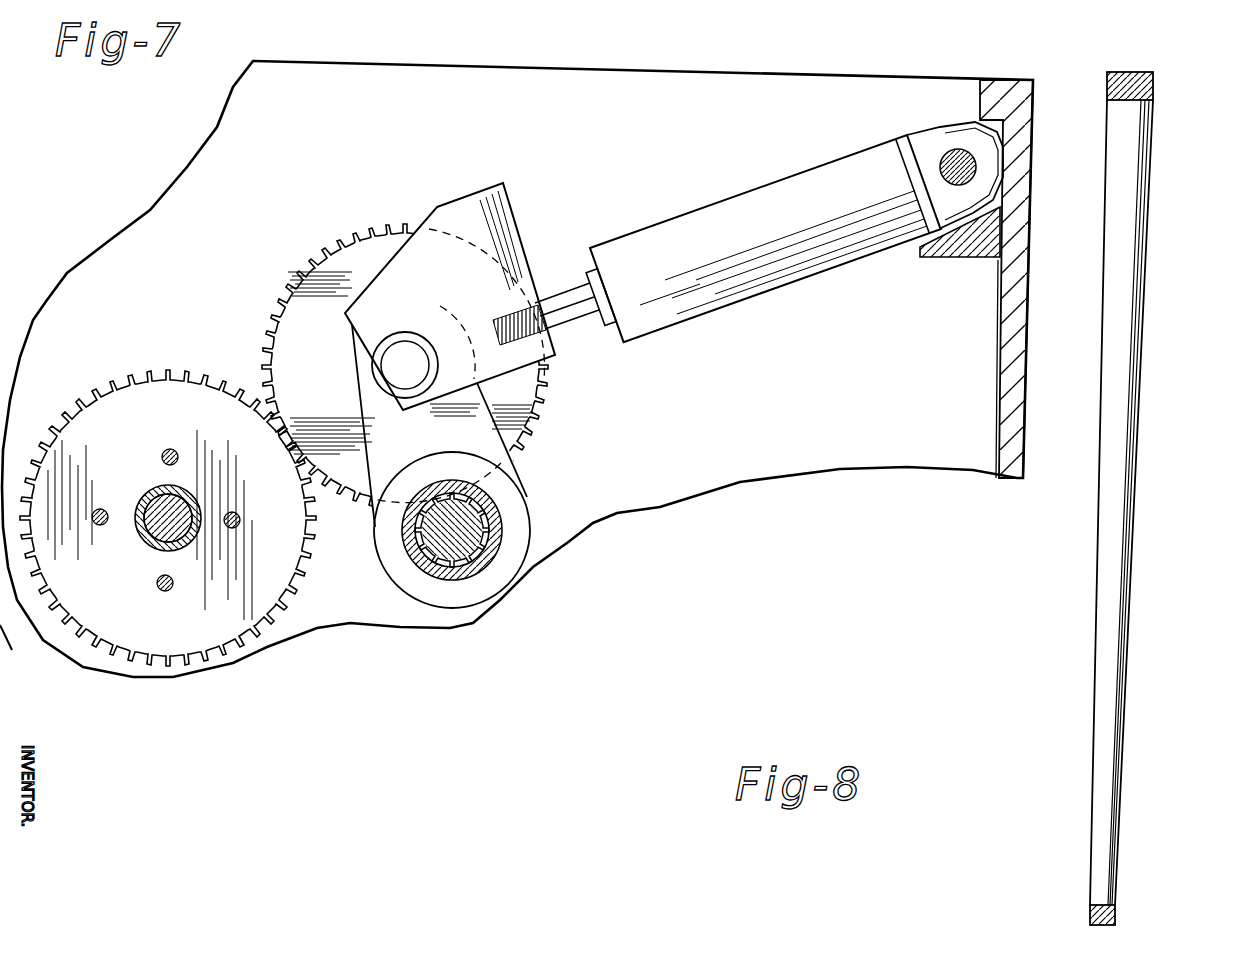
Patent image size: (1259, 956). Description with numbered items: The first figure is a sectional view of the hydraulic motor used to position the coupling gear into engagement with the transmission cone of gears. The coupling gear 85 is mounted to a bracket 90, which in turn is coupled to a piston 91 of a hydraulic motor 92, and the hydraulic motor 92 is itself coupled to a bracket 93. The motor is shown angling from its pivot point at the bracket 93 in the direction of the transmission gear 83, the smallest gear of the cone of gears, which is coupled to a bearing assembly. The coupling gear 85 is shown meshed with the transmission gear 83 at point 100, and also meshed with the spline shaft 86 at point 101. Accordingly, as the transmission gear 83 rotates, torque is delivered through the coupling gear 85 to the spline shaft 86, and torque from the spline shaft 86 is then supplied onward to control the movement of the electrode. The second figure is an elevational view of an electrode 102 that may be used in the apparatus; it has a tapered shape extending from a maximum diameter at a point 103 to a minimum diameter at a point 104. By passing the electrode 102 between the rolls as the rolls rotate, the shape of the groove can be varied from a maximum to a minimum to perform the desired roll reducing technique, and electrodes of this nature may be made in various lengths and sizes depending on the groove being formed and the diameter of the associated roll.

In FIG. 7, the transmission gear 83 is at (152, 405).
In FIG. 7, the coupling gear 85 is at (357, 270).
In FIG. 7, the spline shaft 86 is at (497, 503).
In FIG. 7, the bracket 90 is at (463, 208).
In FIG. 7, the piston 91 is at (562, 302).
In FIG. 7, the hydraulic motor 92 is at (722, 210).
In FIG. 7, the bracket 93 is at (953, 157).
In FIG. 7, the point of meshing 100 is at (263, 407).
In FIG. 7, the point of meshing 101 is at (482, 478).
In FIG. 8, the electrode 102 is at (1130, 238).
In FIG. 8, the point of maximum diameter 103 is at (1138, 122).
In FIG. 8, the point of minimum diameter 104 is at (1108, 895).